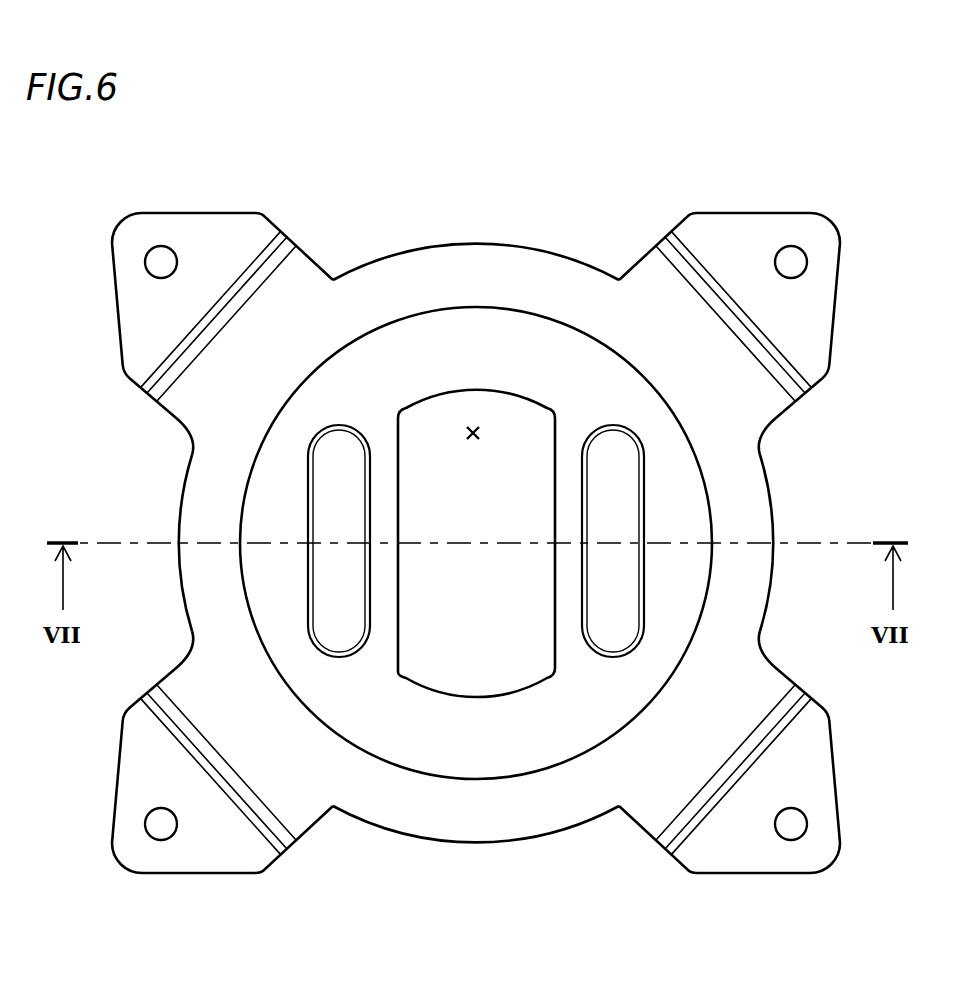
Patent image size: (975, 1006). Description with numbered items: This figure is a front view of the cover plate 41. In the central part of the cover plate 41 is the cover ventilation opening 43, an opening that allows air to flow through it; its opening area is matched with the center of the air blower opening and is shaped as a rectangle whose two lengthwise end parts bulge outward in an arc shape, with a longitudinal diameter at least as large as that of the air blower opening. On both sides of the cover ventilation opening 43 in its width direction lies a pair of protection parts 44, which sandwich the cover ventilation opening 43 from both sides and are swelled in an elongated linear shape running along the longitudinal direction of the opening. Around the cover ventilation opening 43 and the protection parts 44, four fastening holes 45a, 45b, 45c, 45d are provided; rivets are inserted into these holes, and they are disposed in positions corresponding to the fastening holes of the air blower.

The cover plate 41 is at (542, 272).
The cover ventilation opening 43 is at (472, 428).
The protection part 44 is at (340, 627).
The fastening hole 45a is at (793, 258).
The fastening hole 45b is at (790, 824).
The fastening hole 45c is at (162, 824).
The fastening hole 45d is at (165, 260).